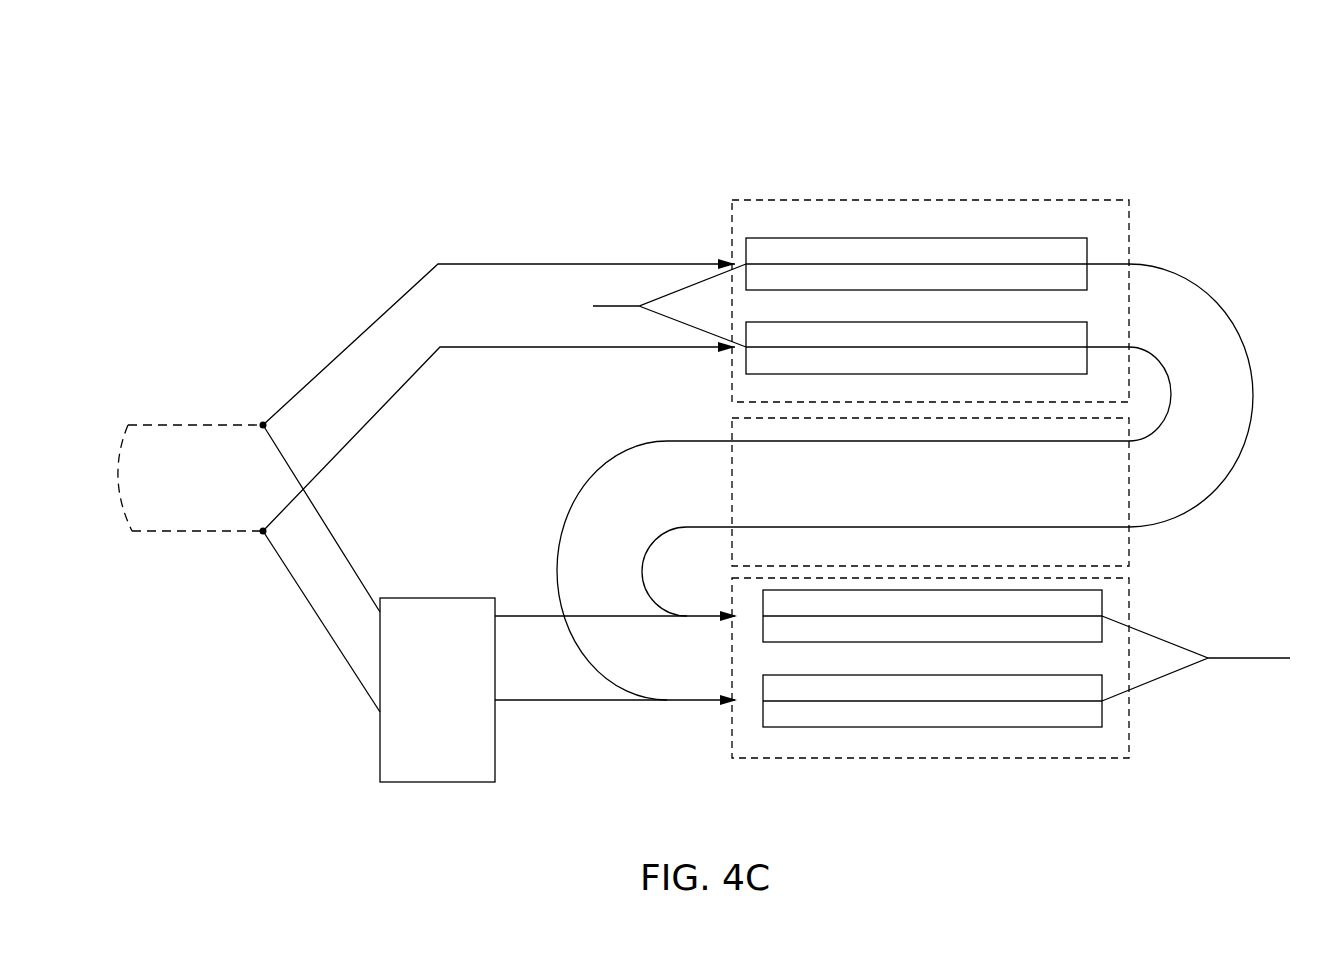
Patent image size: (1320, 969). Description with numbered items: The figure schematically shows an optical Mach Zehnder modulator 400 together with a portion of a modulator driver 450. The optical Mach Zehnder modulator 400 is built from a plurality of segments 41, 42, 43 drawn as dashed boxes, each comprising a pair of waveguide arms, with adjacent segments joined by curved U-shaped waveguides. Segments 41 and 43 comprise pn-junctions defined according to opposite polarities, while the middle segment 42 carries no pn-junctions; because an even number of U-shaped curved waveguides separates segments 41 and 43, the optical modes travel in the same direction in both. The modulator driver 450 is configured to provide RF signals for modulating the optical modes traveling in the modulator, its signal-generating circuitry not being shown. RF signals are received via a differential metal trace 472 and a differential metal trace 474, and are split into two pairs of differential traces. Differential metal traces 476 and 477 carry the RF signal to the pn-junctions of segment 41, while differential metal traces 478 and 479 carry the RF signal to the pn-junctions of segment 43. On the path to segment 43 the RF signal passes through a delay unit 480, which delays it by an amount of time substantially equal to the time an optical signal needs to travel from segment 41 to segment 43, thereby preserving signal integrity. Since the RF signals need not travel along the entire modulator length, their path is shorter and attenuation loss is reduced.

The optical Mach Zehnder modulator 400 is at (766, 98).
The modulator driver 450 is at (268, 238).
The segment 41 is at (730, 222).
The segment 42 is at (730, 428).
The segment 43 is at (1130, 742).
The differential metal trace 472 is at (203, 423).
The differential metal trace 474 is at (228, 533).
The differential metal trace 476 is at (425, 267).
The differential metal trace 477 is at (418, 372).
The differential metal trace 478 is at (358, 577).
The differential metal trace 479 is at (350, 671).
The delay unit 480 is at (466, 784).